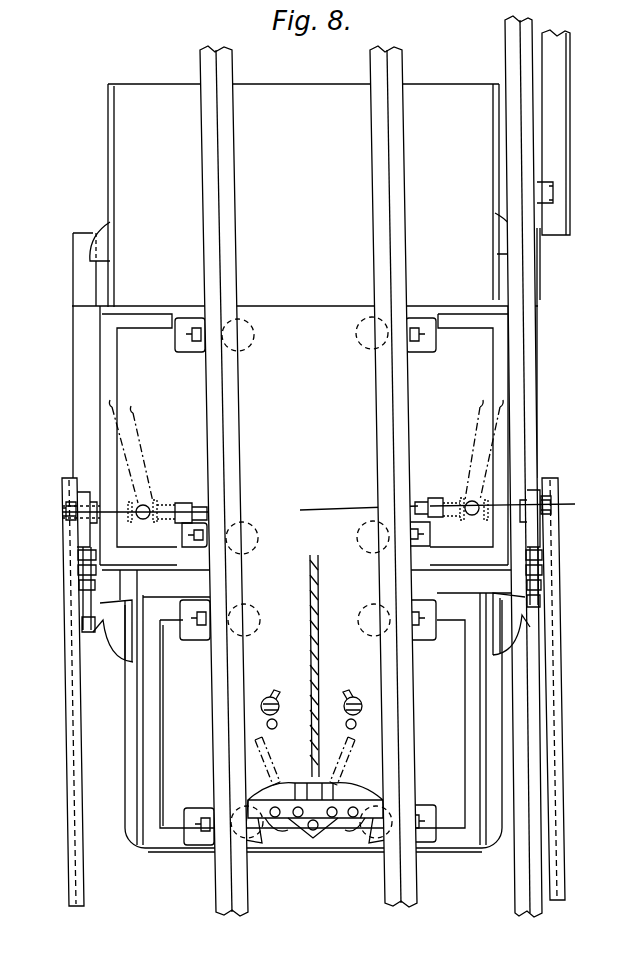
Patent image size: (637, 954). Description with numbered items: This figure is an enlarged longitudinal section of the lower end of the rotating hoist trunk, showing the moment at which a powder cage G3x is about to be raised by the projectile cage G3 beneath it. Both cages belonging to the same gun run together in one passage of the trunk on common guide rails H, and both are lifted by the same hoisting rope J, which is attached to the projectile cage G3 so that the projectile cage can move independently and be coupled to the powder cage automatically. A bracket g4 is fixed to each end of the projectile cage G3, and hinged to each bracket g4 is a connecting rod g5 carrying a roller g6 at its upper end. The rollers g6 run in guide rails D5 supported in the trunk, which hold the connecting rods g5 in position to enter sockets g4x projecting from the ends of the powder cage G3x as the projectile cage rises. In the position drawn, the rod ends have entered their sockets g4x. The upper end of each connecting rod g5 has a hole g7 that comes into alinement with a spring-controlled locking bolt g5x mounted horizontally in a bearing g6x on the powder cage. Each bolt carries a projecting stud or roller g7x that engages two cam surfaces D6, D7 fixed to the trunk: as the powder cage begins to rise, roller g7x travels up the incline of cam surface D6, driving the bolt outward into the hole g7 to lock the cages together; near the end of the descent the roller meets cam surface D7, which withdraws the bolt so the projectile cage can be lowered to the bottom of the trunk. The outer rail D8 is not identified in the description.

The guide rail D8 is at (512, 42).
The cam surface D7 is at (121, 425).
The cam surface D6 is at (140, 437).
The guide rail D5 is at (74, 757).
The projectile cage G3 is at (311, 711).
The powder cage G3x is at (291, 313).
The guide rails H is at (233, 384).
The hoisting rope J is at (320, 562).
The bracket g4 is at (118, 652).
The socket g4x is at (88, 498).
The connecting rod g5 is at (85, 604).
The locking bolt g5x is at (210, 512).
The roller g6 is at (66, 504).
The bearing g6x is at (187, 506).
The hole g7 is at (64, 515).
The stud or roller g7x is at (149, 505).